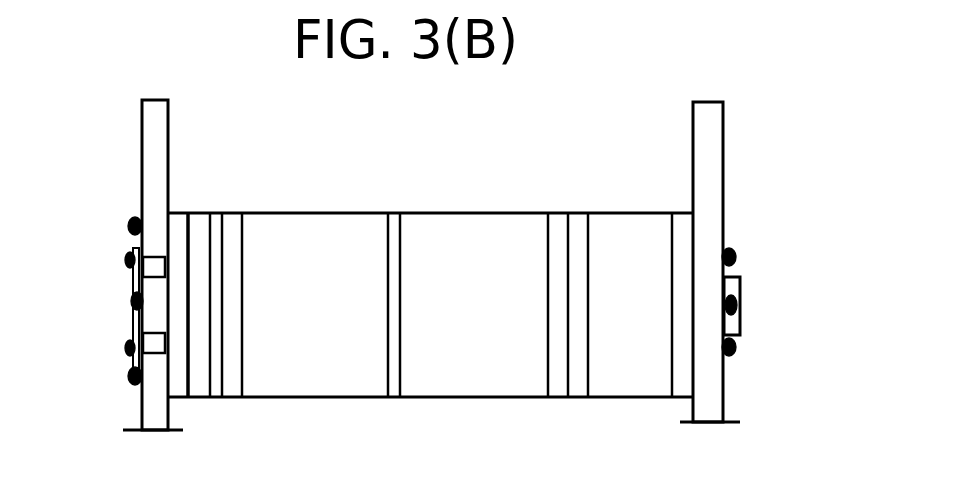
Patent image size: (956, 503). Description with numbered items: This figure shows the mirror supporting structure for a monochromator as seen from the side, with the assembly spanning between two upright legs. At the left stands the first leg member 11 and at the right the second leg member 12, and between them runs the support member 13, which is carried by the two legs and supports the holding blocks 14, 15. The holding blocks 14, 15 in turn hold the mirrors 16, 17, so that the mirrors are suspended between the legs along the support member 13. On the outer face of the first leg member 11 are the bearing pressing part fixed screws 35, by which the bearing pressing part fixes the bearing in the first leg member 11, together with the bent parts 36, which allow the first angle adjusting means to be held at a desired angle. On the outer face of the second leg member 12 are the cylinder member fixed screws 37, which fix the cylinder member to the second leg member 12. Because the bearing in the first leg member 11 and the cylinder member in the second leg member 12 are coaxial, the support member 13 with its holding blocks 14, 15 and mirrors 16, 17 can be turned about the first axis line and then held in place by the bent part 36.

The first leg member 11 is at (160, 143).
The second leg member 12 is at (712, 167).
The support member 13 is at (178, 227).
The holding block 14 is at (210, 397).
The holding block 15 is at (578, 385).
The mirror 16 is at (340, 372).
The mirror 17 is at (470, 365).
The bearing pressing part fixed screw 35 is at (128, 262).
The bent part 36 is at (128, 228).
The cylinder member fixed screw 37 is at (737, 258).